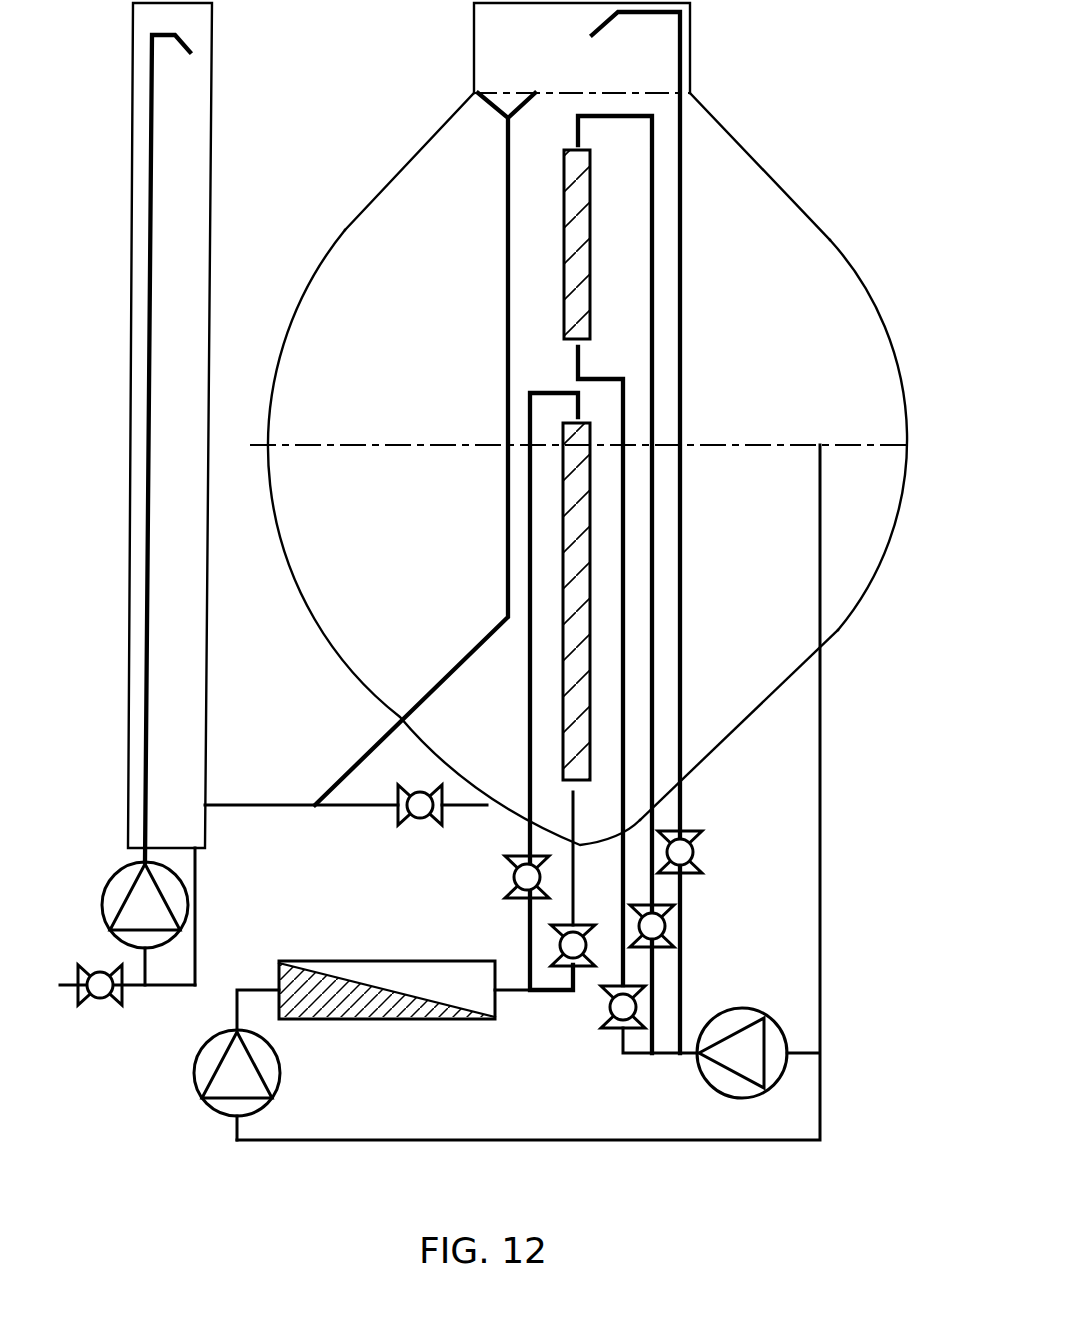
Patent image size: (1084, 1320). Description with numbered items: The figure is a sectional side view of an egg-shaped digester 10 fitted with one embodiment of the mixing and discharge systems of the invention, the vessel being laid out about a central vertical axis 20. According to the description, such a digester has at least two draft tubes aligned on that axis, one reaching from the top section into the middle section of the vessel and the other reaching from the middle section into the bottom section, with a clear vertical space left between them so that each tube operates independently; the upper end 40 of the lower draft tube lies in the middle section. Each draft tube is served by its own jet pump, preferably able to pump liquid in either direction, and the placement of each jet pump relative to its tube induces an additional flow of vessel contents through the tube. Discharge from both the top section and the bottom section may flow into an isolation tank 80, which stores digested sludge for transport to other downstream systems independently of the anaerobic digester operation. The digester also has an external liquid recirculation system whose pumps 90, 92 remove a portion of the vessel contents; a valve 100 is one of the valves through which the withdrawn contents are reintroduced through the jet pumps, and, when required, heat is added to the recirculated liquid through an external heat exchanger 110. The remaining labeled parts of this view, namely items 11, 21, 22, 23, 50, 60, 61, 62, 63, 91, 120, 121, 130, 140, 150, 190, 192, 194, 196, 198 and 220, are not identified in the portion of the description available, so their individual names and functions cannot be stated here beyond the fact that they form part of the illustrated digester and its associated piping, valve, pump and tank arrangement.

The digester 10 is at (595, 228).
The second heating element 11 is at (560, 686).
The central vertical axis 20 is at (584, 128).
The second conduit 21 is at (584, 368).
The third conduit 22 is at (576, 418).
The fourth conduit 23 is at (580, 795).
The upper end of lower draft tube 40 is at (592, 22).
The return conduit 50 is at (815, 472).
The valve 60 is at (556, 968).
The valve 61 is at (670, 927).
The valve 62 is at (502, 878).
The valve 63 is at (604, 1028).
The isolation tank 80 is at (697, 850).
The pump 90 is at (285, 1072).
The pump 91 is at (742, 1006).
The pump 92 is at (116, 864).
The valve 100 is at (386, 1020).
The external heat exchanger 110 is at (190, 42).
The inlet funnel 120 is at (486, 88).
The outlet 121 is at (484, 812).
The valve 130 is at (419, 786).
The valve 140 is at (101, 1007).
The conduit 150 is at (257, 803).
The vessel 190 is at (865, 218).
The lower vessel wall 192 is at (714, 762).
The upper vessel wall 194 is at (780, 178).
The vessel top 196 is at (690, 22).
The liquid level 198 is at (907, 458).
The column 220 is at (214, 172).